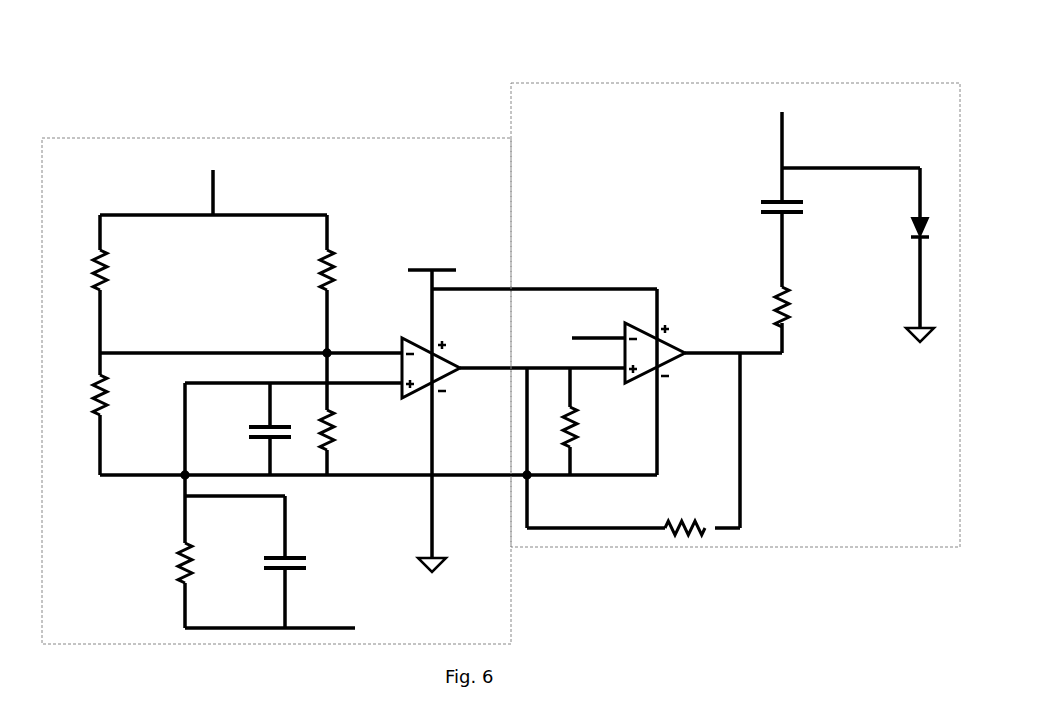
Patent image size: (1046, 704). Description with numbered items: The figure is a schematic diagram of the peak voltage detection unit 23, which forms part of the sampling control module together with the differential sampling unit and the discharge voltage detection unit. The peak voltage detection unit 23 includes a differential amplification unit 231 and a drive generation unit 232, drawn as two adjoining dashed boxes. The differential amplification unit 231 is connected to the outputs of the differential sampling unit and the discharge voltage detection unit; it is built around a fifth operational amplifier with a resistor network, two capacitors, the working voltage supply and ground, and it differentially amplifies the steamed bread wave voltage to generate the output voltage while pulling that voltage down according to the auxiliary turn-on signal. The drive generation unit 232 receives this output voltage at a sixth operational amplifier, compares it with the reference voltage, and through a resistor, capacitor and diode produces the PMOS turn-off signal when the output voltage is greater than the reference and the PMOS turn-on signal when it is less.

The peak voltage detection unit 23 is at (501, 334).
The differential amplification unit 231 is at (278, 139).
The drive generation unit 232 is at (698, 83).